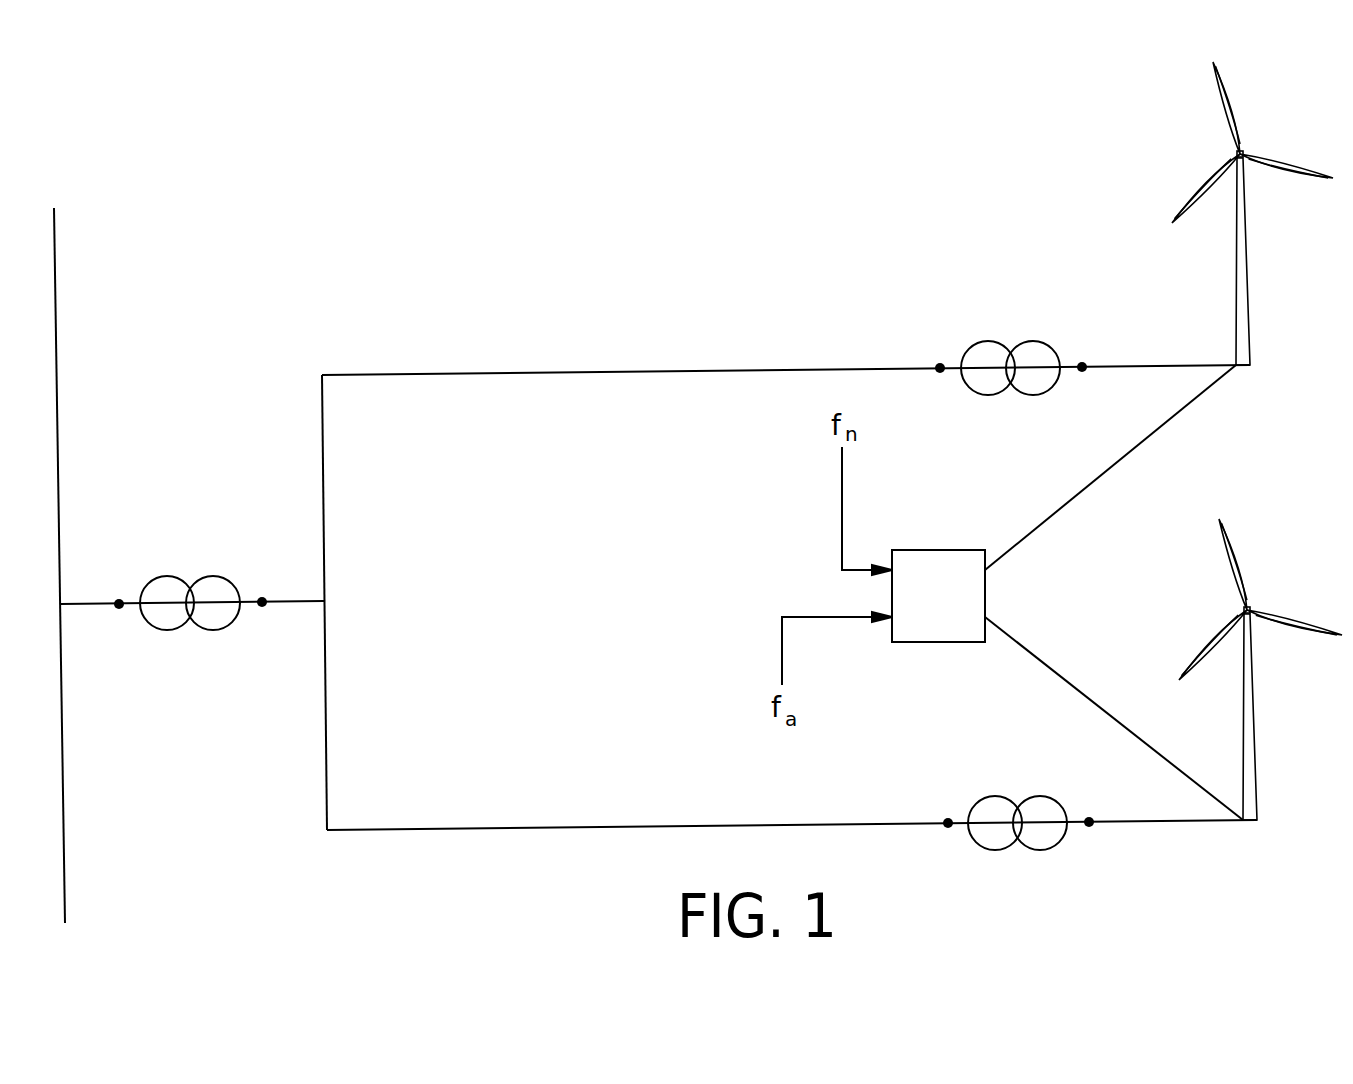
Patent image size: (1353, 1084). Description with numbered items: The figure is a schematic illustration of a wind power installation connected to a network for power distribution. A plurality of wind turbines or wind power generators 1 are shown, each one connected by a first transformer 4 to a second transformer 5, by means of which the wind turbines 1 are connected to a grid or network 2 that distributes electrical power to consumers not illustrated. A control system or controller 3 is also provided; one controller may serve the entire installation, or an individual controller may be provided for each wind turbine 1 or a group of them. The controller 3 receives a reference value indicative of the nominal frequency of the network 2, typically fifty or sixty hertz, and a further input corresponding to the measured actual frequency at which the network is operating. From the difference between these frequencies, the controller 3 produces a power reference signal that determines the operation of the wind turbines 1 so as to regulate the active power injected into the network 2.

The wind turbine 1 is at (1245, 153).
The network 2 is at (56, 332).
The controller 3 is at (897, 597).
The first transformer 4 is at (983, 354).
The second transformer 5 is at (165, 590).